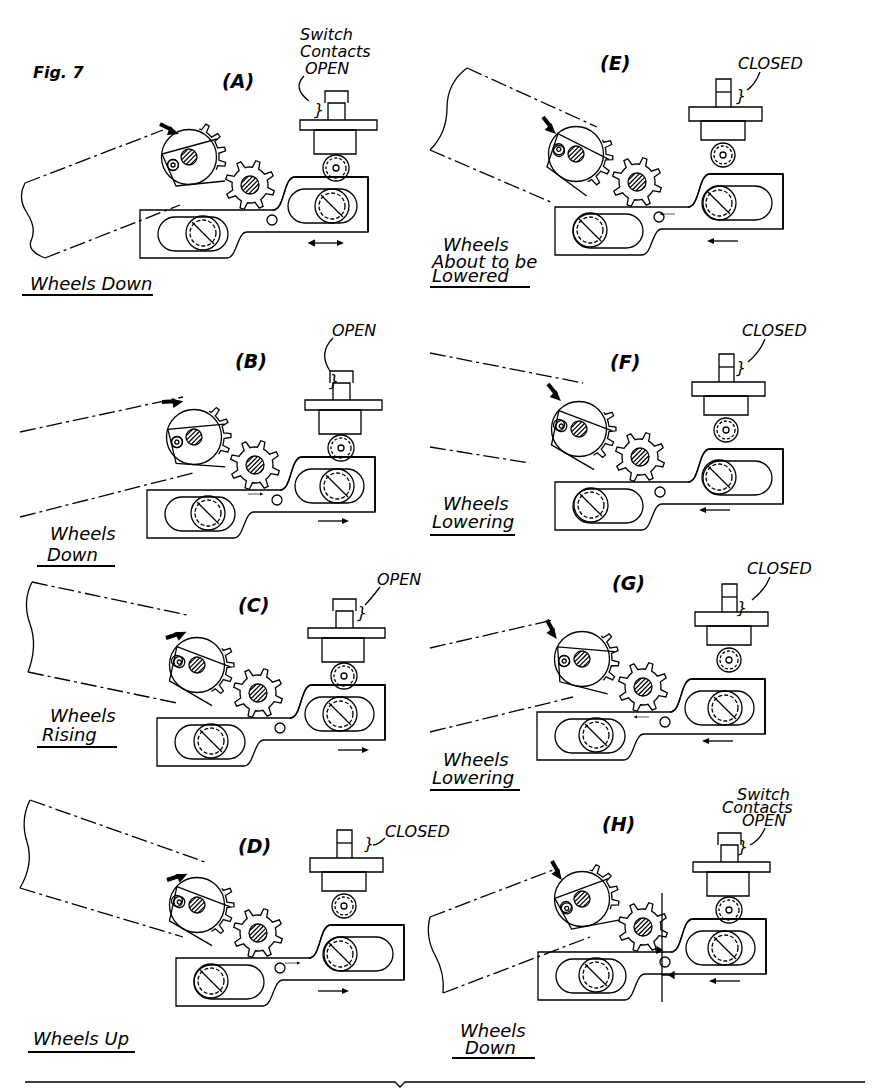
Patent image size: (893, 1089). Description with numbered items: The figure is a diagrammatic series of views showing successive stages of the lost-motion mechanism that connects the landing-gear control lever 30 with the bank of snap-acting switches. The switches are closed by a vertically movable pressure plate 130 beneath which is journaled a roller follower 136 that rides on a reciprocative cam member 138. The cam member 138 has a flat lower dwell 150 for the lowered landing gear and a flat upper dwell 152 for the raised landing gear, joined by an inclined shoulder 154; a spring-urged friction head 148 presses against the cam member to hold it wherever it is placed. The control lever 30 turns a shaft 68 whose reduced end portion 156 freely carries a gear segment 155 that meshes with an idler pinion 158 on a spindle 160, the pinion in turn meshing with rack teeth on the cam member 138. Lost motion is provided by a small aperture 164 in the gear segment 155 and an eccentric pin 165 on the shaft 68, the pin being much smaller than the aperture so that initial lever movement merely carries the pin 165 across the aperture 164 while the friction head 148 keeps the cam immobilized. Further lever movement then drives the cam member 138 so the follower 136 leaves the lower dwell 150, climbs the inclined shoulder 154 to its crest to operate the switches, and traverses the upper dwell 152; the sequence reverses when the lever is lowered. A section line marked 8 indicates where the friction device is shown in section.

The section line 8- 8 is at (664, 944).
The control lever 30 is at (48, 172).
The shaft 68 is at (178, 193).
The pressure plate 130 is at (352, 121).
The follower 136 is at (348, 178).
The cam member 138 is at (360, 225).
The friction head 148 is at (267, 230).
The lower dwell 150 is at (362, 187).
The upper dwell 152 is at (322, 160).
The inclined shoulder 154 is at (328, 190).
The gear segment 155 is at (222, 133).
The reduced end portion 156 is at (190, 152).
The idler pinion 158 is at (241, 168).
The spindle 160 is at (266, 173).
The aperture 164 is at (573, 897).
The eccentric pin 165 is at (170, 167).